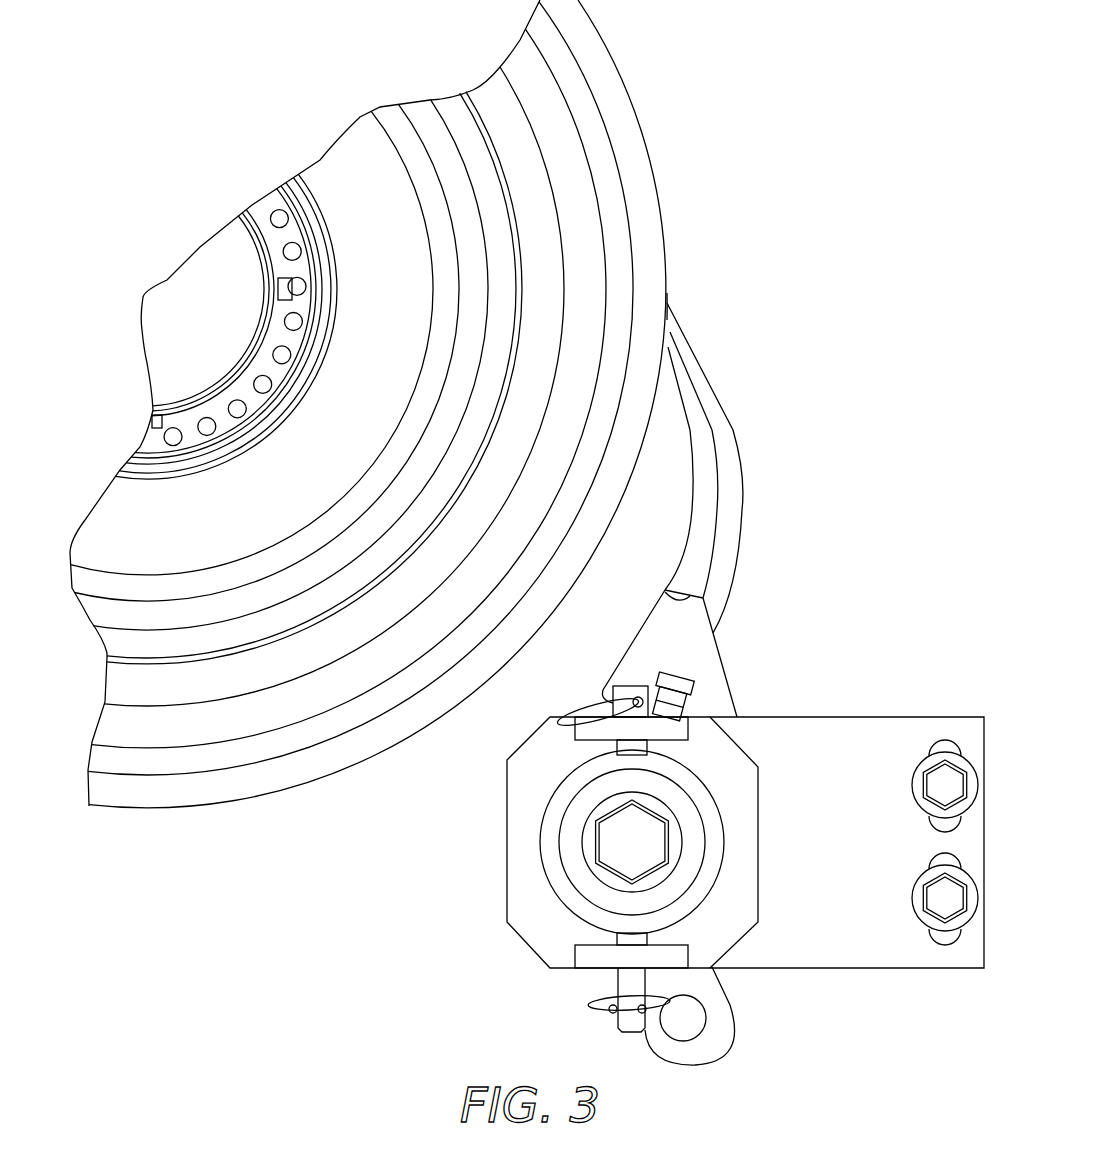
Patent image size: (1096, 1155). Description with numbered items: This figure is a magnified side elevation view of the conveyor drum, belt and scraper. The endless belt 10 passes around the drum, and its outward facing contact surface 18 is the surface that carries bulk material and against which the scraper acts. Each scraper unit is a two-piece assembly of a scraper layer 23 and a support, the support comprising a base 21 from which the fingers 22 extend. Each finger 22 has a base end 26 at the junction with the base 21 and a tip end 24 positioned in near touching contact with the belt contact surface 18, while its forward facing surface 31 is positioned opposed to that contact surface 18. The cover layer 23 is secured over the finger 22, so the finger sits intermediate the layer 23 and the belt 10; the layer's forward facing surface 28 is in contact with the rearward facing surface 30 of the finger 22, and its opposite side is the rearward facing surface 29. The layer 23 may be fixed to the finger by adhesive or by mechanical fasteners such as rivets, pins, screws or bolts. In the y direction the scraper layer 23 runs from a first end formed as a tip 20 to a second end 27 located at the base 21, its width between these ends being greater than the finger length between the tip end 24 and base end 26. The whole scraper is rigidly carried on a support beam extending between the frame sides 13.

The endless belt 10 is at (398, 404).
The outward facing contact surface 18 is at (666, 203).
The tip 20 is at (665, 303).
The tip end 24 is at (670, 350).
The forward facing surface 31 is at (675, 410).
The rearward facing surface 30 is at (717, 447).
The scraper layer 23 is at (737, 468).
The rearward facing surface 29 is at (743, 533).
The finger 22 is at (693, 493).
The forward facing surface 28 is at (703, 556).
The base end 26 is at (668, 592).
The second end 27 is at (715, 633).
The base 21 is at (687, 653).
The frame side 13 is at (845, 735).